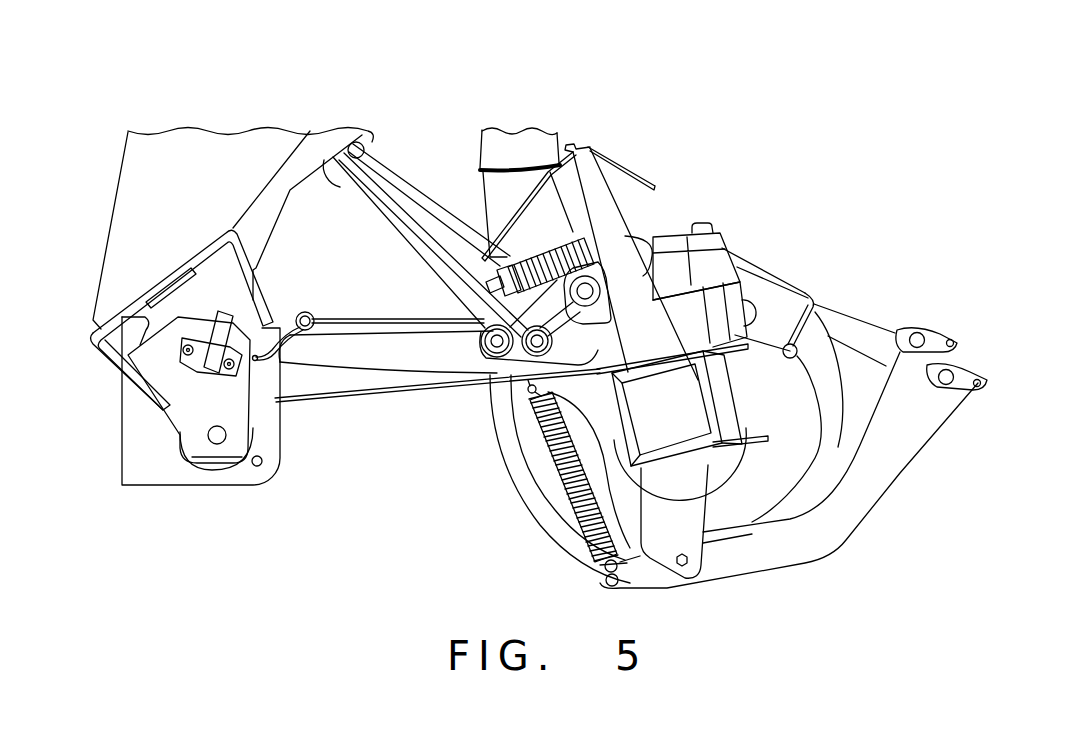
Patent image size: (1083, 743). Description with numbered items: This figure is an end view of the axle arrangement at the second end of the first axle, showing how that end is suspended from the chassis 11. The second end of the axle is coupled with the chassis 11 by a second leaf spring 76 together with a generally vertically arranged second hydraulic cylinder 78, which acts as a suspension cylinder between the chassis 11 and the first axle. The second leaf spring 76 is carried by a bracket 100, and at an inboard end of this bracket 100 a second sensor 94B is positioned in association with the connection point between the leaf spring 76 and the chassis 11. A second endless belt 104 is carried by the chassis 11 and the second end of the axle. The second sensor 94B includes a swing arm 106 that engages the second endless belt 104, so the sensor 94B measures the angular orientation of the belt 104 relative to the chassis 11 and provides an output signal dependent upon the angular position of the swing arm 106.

The chassis 11 is at (118, 208).
The second hydraulic cylinder 78 is at (519, 152).
The swing arm 106 is at (305, 310).
The second endless belt 104 is at (367, 320).
The second leaf spring 76 is at (371, 380).
The second sensor 94B is at (258, 437).
The bracket 100 is at (186, 488).